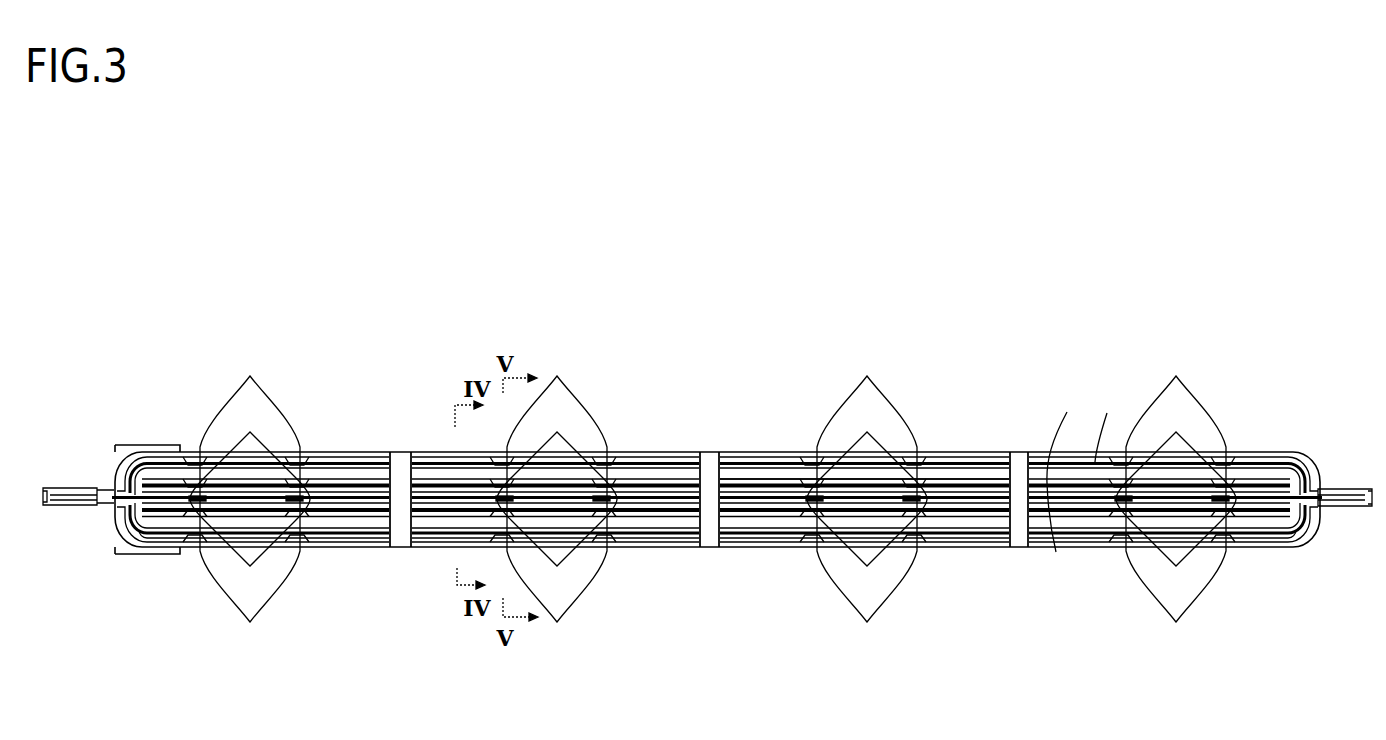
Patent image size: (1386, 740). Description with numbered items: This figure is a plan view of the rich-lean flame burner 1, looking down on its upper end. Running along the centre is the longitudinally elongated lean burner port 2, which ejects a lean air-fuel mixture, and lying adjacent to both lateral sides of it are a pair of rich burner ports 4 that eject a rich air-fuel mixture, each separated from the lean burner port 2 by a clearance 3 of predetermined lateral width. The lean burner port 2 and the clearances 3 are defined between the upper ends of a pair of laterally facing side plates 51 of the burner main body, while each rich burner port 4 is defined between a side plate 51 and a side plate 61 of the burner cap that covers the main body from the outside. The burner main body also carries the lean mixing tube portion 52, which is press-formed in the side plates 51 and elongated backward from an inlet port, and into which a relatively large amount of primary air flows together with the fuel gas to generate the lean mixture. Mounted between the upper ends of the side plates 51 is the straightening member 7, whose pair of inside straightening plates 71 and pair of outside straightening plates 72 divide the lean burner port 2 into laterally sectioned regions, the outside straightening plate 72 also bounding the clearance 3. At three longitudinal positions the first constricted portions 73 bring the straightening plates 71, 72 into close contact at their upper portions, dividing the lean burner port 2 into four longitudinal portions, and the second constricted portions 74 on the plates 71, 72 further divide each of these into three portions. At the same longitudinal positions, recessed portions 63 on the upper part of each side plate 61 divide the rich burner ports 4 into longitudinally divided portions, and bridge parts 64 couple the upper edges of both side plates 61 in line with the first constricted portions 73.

The rich-lean flame burner 1 is at (742, 452).
The lean burner port 2 is at (675, 498).
The clearance 3 is at (658, 525).
The rich burner port 4 is at (773, 537).
The straightening member 7 is at (980, 477).
The side plate of the burner main body 51 is at (1231, 447).
The lean mixing tube portion 52 is at (153, 447).
The side plate of the burner cap 61 is at (1064, 469).
The recessed portion 63 is at (713, 498).
The bridge part 64 is at (400, 527).
The inside straightening plate 71 is at (942, 503).
The outside straightening plate 72 is at (968, 483).
The first constricted portion 73 is at (410, 485).
The second constricted portion 74 is at (713, 498).